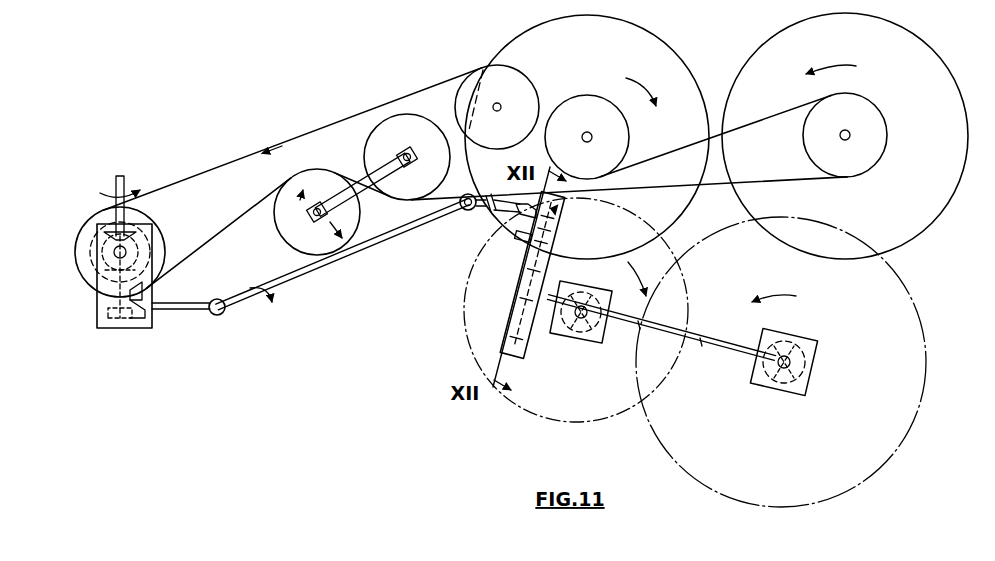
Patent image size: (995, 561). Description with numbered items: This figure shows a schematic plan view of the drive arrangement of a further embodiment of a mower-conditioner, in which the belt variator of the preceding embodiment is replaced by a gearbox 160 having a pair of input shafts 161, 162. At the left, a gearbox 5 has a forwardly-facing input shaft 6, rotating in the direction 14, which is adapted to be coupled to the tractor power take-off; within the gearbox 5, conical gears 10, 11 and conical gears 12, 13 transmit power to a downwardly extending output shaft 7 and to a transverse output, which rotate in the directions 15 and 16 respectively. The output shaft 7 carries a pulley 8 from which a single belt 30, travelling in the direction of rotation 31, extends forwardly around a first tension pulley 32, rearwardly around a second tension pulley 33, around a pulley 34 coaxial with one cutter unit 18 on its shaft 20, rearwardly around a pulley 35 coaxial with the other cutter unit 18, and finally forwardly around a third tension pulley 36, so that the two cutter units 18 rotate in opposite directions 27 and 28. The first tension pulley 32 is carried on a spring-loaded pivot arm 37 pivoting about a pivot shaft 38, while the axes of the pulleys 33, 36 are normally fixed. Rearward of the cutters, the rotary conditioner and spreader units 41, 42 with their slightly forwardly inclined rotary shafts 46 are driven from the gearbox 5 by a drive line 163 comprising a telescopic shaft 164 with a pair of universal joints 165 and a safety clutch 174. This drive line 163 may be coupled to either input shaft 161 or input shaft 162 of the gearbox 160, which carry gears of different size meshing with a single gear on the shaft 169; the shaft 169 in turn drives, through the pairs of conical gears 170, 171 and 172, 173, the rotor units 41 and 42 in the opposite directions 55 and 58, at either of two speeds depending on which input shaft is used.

The gearbox 5 is at (97, 322).
The input shaft 6 is at (114, 184).
The output shaft 7 is at (114, 256).
The pulley 8 is at (98, 300).
The conical gear 10 is at (136, 235).
The conical gear 11 is at (150, 248).
The conical gear 12 is at (108, 330).
The conical gear 13 is at (140, 330).
The direction of movement of the input shaft 14 is at (134, 198).
The direction of rotation of output shaft 15 is at (160, 312).
The direction of rotation of transverse output shaft 16 is at (262, 304).
The cutter unit 18 is at (690, 56).
The cutter unit shaft 20 is at (587, 131).
The direction of rotation 27 is at (649, 89).
The direction of rotation 28 is at (848, 64).
The belt 30 is at (362, 118).
The direction of rotation of belt 31 is at (286, 156).
The first tension pulley 32 is at (279, 236).
The second tension pulley 33 is at (438, 124).
The pulley 34 is at (803, 140).
The pulley 35 is at (630, 148).
The third tension pulley 36 is at (484, 68).
The pivot arm 37 is at (366, 196).
The pivot shaft 38 is at (398, 154).
The rotary conditioner and spreader unit 41 is at (590, 418).
The rotary conditioner and spreader unit 42 is at (886, 462).
The rotary shaft 46 is at (586, 292).
The direction of rotation 55 is at (646, 273).
The direction of rotation 58 is at (800, 296).
The gearbox 160 is at (506, 330).
The input shaft 161 is at (512, 258).
The input shaft 162 is at (530, 232).
The drive line 163 is at (314, 285).
The telescopic shaft 164 is at (352, 262).
The universal joint 165 is at (220, 314).
The shaft 169 is at (712, 352).
The conical gear 170 is at (568, 336).
The conical gear 171 is at (594, 338).
The conical gear 172 is at (798, 390).
The conical gear 173 is at (776, 388).
The safety clutch 174 is at (490, 220).